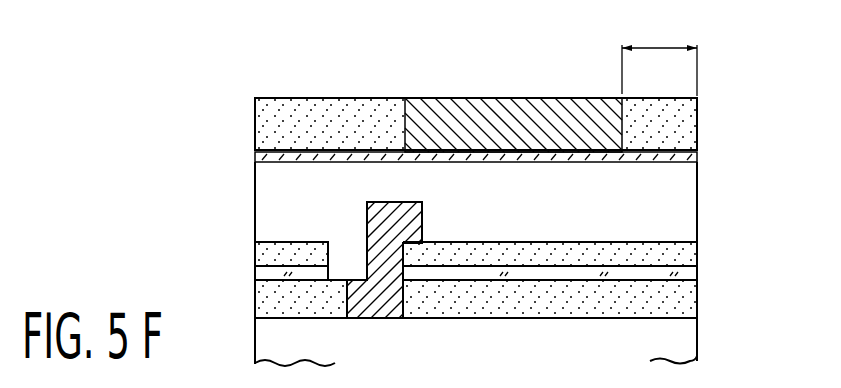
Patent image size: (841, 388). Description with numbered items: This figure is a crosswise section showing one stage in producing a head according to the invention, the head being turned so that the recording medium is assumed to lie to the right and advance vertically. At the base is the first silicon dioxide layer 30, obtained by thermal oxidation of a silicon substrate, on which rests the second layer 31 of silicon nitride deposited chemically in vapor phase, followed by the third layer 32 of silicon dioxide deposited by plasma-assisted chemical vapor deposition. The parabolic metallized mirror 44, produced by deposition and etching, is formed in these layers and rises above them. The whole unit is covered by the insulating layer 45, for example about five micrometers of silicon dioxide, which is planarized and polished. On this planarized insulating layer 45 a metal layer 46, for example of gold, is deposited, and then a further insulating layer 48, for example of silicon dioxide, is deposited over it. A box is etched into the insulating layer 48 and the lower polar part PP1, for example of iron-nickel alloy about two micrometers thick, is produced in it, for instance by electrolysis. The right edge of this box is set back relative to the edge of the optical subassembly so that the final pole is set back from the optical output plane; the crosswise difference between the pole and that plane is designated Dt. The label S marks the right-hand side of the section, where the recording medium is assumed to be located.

The first silicon dioxide layer 30 is at (533, 315).
The second layer of silicon nitride 31 is at (628, 270).
The third layer of silicon dioxide 32 is at (480, 252).
The parabolic metallized mirror 44 is at (367, 215).
The insulating layer 45 is at (268, 212).
The metal layer 46 is at (258, 152).
The insulating layer 48 is at (262, 116).
The lower polar part PP1 is at (465, 120).
The crosswise difference between the pole and the output plane Dt is at (659, 53).
The substrate edge S is at (684, 346).